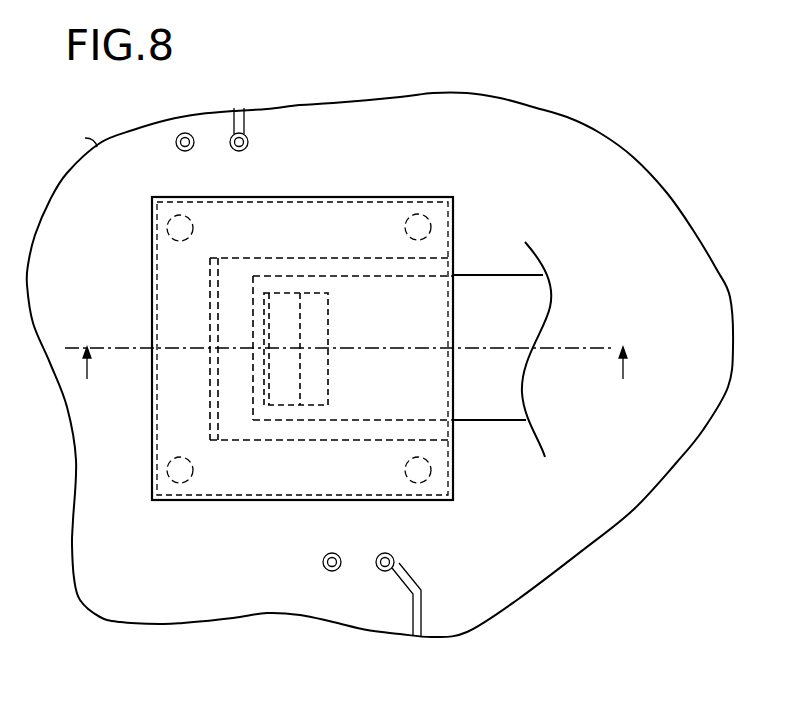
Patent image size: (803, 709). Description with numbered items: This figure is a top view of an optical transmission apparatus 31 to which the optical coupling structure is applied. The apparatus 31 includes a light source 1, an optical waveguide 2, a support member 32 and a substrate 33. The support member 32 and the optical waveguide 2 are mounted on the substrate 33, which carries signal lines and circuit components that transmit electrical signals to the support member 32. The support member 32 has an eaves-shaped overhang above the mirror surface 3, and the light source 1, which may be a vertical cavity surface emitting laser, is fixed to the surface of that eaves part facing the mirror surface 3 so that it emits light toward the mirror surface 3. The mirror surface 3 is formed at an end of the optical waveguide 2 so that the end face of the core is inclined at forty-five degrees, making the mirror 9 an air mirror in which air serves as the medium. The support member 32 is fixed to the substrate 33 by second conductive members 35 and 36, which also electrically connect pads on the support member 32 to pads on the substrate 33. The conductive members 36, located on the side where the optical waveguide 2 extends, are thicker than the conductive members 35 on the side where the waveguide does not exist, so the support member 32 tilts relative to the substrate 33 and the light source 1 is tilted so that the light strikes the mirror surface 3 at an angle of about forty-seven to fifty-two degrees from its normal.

The light source 1 is at (285, 276).
The optical waveguide 2 is at (503, 275).
The mirror surface 3 is at (313, 293).
The mirror 9 is at (283, 440).
The optical transmission apparatus 31 is at (393, 78).
The support member 32 is at (150, 274).
The substrate 33 is at (85, 138).
The second conductive members 35 is at (168, 222).
The second conductive members 36 is at (432, 220).